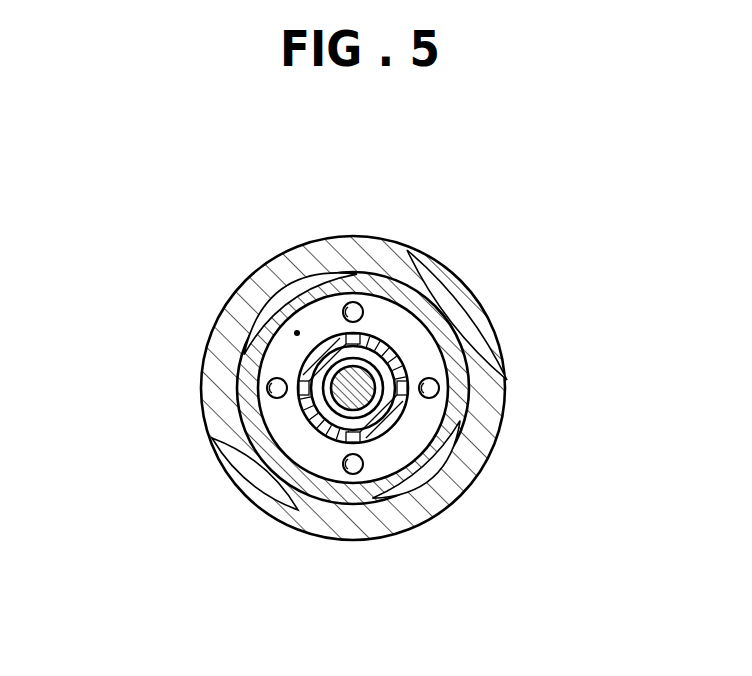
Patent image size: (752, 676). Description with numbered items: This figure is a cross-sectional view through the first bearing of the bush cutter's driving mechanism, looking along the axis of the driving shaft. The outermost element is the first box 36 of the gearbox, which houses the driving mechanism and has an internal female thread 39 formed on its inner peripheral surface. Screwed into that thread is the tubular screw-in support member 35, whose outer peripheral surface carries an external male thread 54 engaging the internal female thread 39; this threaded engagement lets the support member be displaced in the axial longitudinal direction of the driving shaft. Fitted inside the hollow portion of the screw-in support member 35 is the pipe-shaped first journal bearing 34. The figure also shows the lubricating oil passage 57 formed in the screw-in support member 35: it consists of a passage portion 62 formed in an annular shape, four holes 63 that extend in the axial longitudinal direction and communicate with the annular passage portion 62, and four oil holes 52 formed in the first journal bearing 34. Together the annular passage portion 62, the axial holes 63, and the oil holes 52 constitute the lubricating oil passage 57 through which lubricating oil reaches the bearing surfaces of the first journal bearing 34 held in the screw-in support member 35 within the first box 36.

The first journal bearing 34 is at (390, 355).
The screw-in support member 35 is at (247, 335).
The first box 36 is at (237, 287).
The internal female thread 39 is at (268, 445).
The oil holes 52 is at (268, 382).
The external male thread 54 is at (439, 374).
The lubricating oil passage 57 is at (297, 333).
The passage portion 62 is at (372, 338).
The holes 63 is at (268, 392).